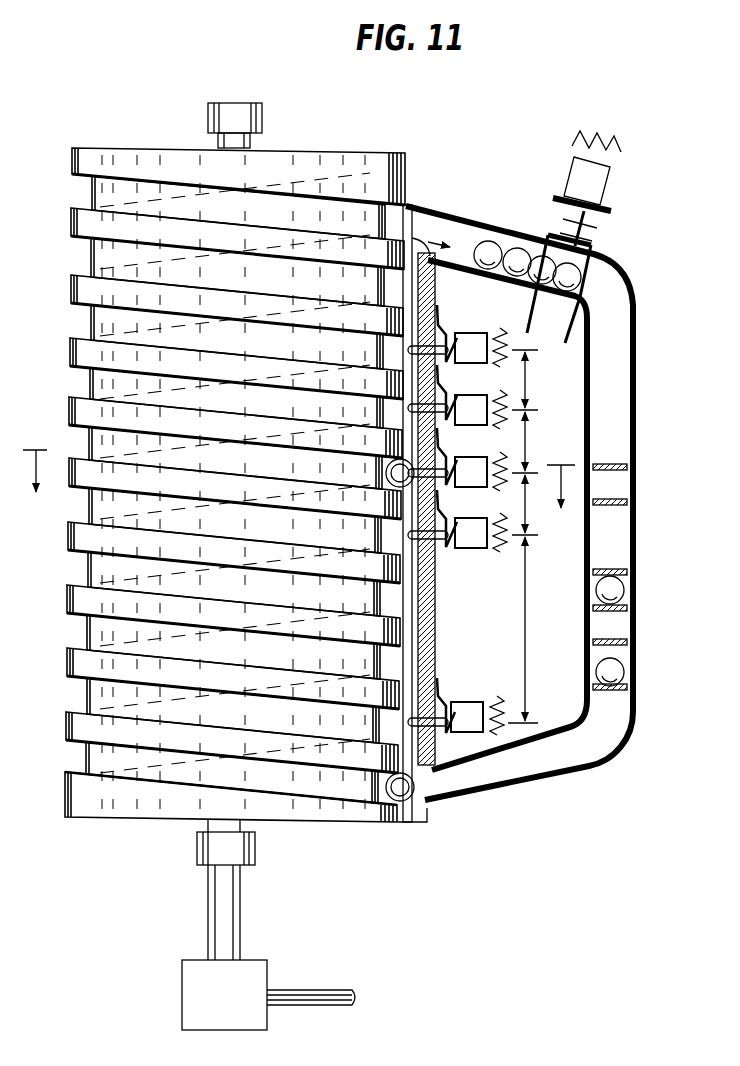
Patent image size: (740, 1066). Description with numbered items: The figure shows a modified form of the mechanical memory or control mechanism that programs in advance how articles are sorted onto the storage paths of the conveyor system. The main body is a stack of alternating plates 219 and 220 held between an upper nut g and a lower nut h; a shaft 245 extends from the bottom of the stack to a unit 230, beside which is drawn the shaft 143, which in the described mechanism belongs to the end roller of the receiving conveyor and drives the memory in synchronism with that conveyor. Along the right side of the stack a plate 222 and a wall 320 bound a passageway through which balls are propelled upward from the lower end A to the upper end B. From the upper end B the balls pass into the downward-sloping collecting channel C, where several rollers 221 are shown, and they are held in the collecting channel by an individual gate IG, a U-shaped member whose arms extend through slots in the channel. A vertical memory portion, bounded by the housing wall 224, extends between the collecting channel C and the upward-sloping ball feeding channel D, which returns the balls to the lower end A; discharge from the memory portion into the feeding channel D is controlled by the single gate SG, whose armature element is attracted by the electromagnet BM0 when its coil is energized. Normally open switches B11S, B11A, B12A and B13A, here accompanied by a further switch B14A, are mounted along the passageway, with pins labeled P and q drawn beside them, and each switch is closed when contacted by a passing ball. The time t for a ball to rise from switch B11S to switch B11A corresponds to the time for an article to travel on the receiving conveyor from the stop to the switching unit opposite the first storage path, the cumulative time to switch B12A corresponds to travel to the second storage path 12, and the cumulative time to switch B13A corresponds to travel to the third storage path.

The spacer plate 219 is at (93, 193).
The spacer plate 220 is at (88, 243).
The rollers / pivot 221 is at (486, 242).
The support plate 222 is at (406, 578).
The housing wall 224 is at (640, 452).
The insulating wall 320 is at (415, 608).
The shaft 245 is at (209, 937).
The drive unit 230 is at (228, 1031).
The shaft 143 is at (315, 1007).
The second storage path 12 is at (297, 497).
The upper nut g is at (208, 122).
The lower nut h is at (197, 842).
The lower end of passageway A is at (380, 823).
The upper end of passageway B is at (437, 263).
The collecting channel C is at (522, 254).
The ball feeding channel D is at (566, 768).
The individual gate IG is at (662, 217).
The single gate SG is at (640, 690).
The electromagnet BM0 is at (630, 672).
The pin P is at (424, 561).
The pin q is at (408, 536).
The bin element B14A is at (457, 336).
The electrical switch B13A is at (457, 397).
The electrical switch B12A is at (457, 459).
The electrical switch B11A is at (457, 521).
The electrical switch B11S is at (456, 706).
The time interval t is at (528, 536).